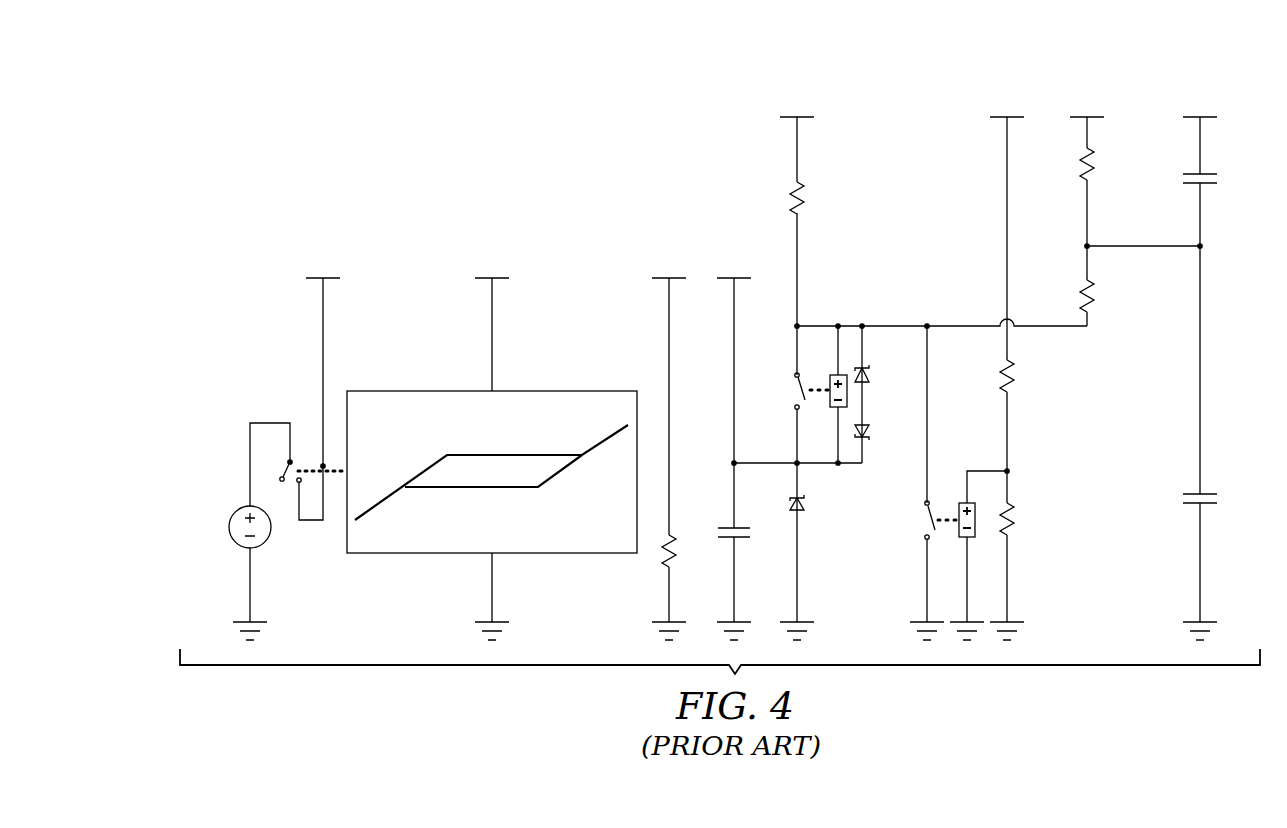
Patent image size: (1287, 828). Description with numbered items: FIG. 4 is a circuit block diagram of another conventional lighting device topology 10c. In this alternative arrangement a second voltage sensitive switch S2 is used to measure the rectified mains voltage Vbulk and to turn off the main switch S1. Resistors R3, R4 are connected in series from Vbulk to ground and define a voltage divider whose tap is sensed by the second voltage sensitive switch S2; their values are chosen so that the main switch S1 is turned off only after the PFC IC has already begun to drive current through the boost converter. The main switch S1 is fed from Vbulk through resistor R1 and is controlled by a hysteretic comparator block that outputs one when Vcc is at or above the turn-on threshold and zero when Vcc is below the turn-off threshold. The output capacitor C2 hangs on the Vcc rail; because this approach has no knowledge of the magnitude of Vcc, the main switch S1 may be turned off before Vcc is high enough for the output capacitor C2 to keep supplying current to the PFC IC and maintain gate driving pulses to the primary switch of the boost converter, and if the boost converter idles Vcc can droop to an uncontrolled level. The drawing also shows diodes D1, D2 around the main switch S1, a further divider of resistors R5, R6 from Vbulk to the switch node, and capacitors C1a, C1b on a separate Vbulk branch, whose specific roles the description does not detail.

The prior art undervoltage lockout circuit 10c is at (338, 173).
The resistor R1 is at (802, 233).
The resistor R3 is at (1012, 281).
The resistor R4 is at (1018, 555).
The resistor R5 is at (1092, 168).
The resistor R6 is at (1103, 285).
The capacitor C1a is at (1217, 169).
The capacitor C1b is at (1223, 443).
The output capacitor C2 is at (739, 447).
The zener diode D1 is at (806, 551).
The zener diode pair D2 is at (878, 393).
The main switch S1 is at (821, 382).
The second voltage sensitive switch S2 is at (959, 482).